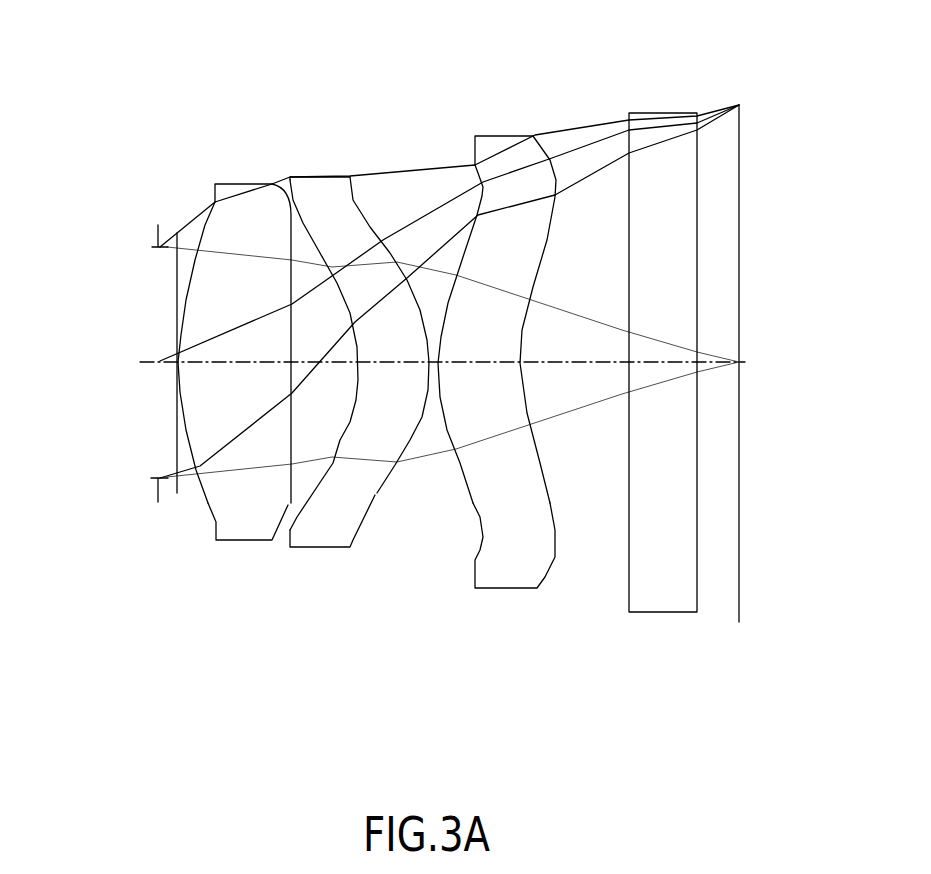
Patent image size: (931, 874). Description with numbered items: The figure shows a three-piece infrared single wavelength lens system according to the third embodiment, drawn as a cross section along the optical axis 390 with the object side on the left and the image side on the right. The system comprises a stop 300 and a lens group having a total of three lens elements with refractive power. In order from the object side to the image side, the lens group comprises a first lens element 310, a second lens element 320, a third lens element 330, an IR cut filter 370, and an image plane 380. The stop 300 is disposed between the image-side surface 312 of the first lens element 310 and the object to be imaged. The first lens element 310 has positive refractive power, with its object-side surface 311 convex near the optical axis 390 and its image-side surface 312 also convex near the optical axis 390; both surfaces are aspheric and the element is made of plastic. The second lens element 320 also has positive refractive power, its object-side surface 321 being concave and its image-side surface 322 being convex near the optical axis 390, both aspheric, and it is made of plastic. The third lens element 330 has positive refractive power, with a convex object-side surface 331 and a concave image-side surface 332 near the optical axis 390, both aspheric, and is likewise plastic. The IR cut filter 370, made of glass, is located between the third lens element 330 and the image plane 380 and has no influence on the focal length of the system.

The stop 300 is at (158, 232).
The first lens element 310 is at (234, 374).
The object-side surface of the first lens element 311 is at (207, 507).
The image-side surface of the first lens element 312 is at (266, 541).
The second lens element 320 is at (358, 373).
The object-side surface of the second lens element 321 is at (289, 533).
The image-side surface of the second lens element 322 is at (376, 497).
The third lens element 330 is at (508, 349).
The object-side surface of the third lens element 331 is at (472, 503).
The image-side surface of the third lens element 332 is at (555, 523).
The IR cut filter 370 is at (656, 112).
The image plane 380 is at (741, 528).
The optical axis 390 is at (148, 360).